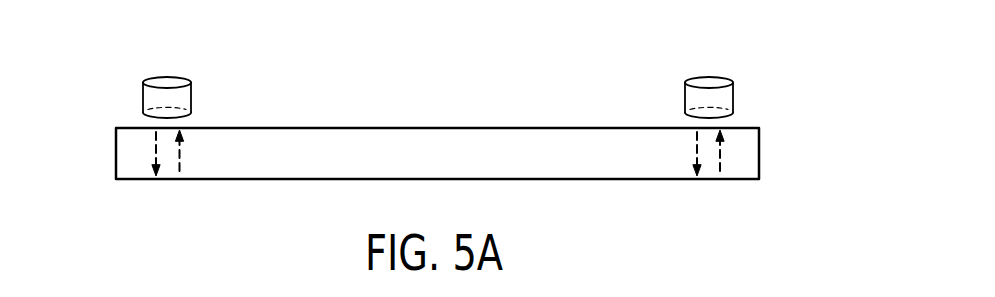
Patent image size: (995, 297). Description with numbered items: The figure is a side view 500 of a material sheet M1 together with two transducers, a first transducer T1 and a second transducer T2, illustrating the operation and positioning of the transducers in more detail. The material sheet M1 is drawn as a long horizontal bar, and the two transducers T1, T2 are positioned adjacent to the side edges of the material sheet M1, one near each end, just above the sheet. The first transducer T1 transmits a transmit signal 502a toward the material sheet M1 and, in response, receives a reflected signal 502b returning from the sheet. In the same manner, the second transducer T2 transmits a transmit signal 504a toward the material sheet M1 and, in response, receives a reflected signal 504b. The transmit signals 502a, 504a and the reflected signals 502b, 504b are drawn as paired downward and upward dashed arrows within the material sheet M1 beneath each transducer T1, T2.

The side view 500 is at (448, 120).
The transmit signal 502a is at (153, 150).
The reflected signal 502b is at (182, 158).
The transmit signal 504a is at (693, 147).
The reflected signal 504b is at (723, 162).
The first transducer T1 is at (167, 76).
The second transducer T2 is at (708, 76).
The material sheet M1 is at (437, 153).